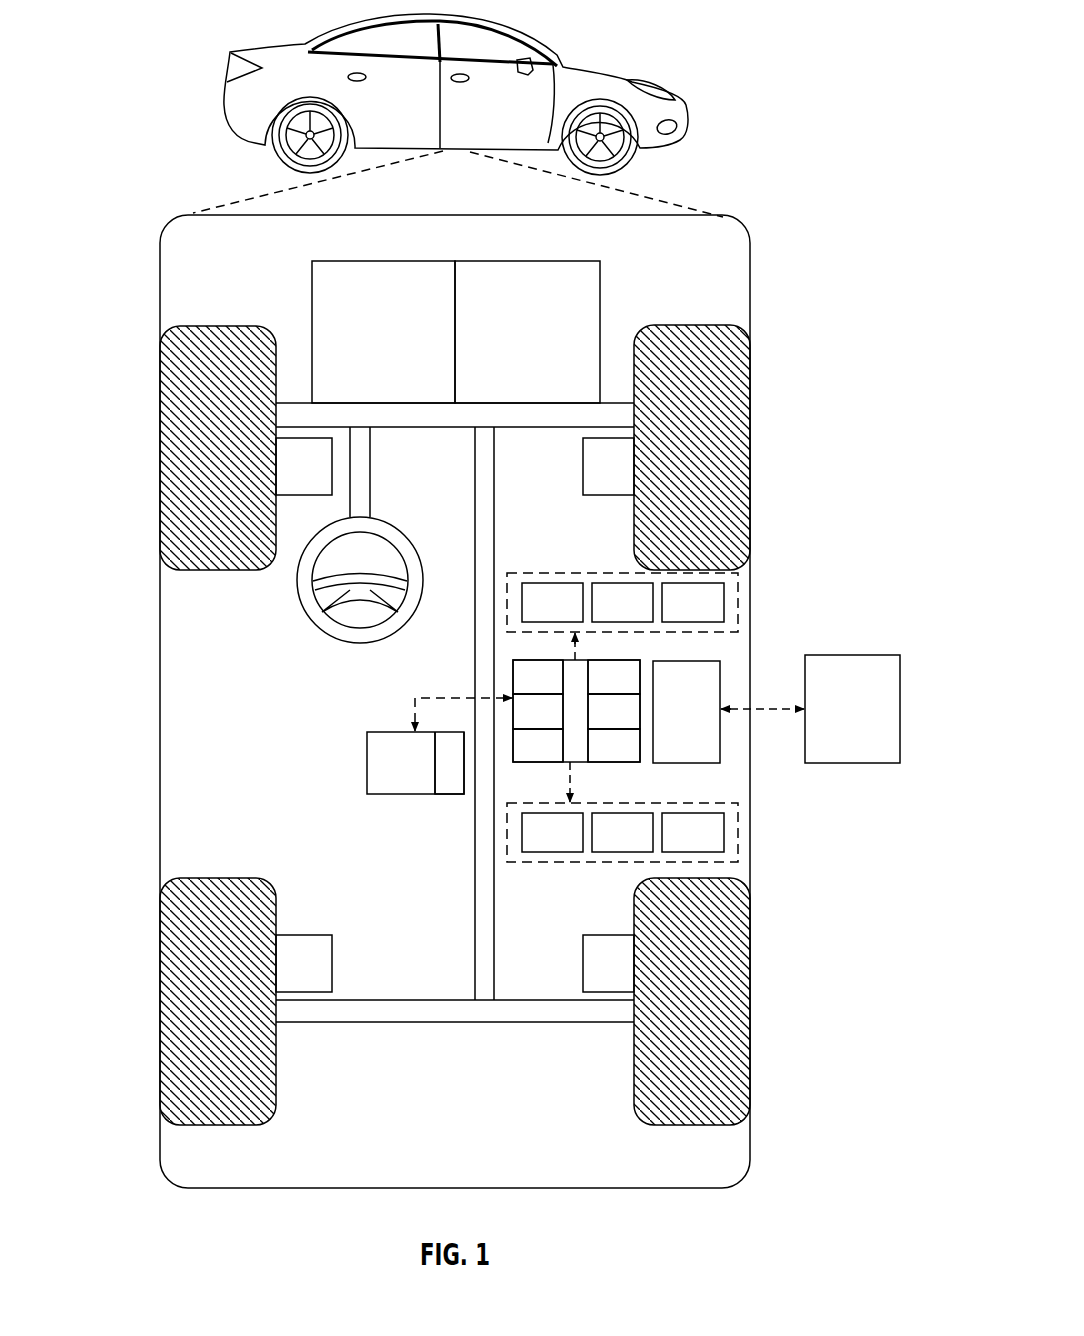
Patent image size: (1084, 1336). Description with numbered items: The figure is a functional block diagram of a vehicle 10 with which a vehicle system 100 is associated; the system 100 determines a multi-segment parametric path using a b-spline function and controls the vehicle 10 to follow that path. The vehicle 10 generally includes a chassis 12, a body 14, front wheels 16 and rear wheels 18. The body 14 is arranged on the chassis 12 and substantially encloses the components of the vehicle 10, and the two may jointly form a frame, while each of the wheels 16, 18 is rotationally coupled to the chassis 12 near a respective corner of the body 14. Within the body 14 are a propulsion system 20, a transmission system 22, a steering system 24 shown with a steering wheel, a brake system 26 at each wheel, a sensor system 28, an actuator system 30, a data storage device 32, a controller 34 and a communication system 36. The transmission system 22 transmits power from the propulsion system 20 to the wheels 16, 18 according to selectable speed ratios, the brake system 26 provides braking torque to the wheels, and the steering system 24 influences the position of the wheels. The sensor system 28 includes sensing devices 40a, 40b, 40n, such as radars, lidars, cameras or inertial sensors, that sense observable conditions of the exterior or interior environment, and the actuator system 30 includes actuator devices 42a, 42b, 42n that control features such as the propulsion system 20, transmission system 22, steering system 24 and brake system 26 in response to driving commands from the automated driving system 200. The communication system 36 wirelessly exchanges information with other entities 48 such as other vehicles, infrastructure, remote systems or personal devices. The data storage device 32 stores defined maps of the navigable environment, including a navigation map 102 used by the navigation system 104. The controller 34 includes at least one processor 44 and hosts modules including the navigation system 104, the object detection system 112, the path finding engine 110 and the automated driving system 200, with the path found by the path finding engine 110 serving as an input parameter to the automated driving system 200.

The vehicle 10 is at (222, 108).
The vehicle system 100 is at (794, 220).
The chassis 12 is at (475, 912).
The body 14 is at (160, 663).
The front wheels 16 is at (218, 326).
The rear wheels 18 is at (218, 1125).
The propulsion system 20 is at (369, 343).
The transmission system 22 is at (513, 343).
The steering system 24 is at (380, 494).
The brake system 26 is at (290, 478).
The sensor system 28 is at (566, 572).
The actuator system 30 is at (572, 863).
The data storage device 32 is at (387, 775).
The controller 34 is at (576, 717).
The communication system 36 is at (672, 723).
The sensing device 40a is at (532, 614).
The sensing device 40b is at (602, 614).
The sensing device 40n is at (673, 614).
The actuator device 42a is at (532, 844).
The actuator device 42b is at (602, 844).
The actuator device 42n is at (673, 844).
The processor 44 is at (524, 758).
The other entities 48 is at (838, 720).
The navigation map 102 is at (450, 795).
The navigation system 104 is at (594, 724).
The path finding engine 110 is at (594, 689).
The object detection system 112 is at (518, 724).
The automated driving system 200 is at (518, 689).